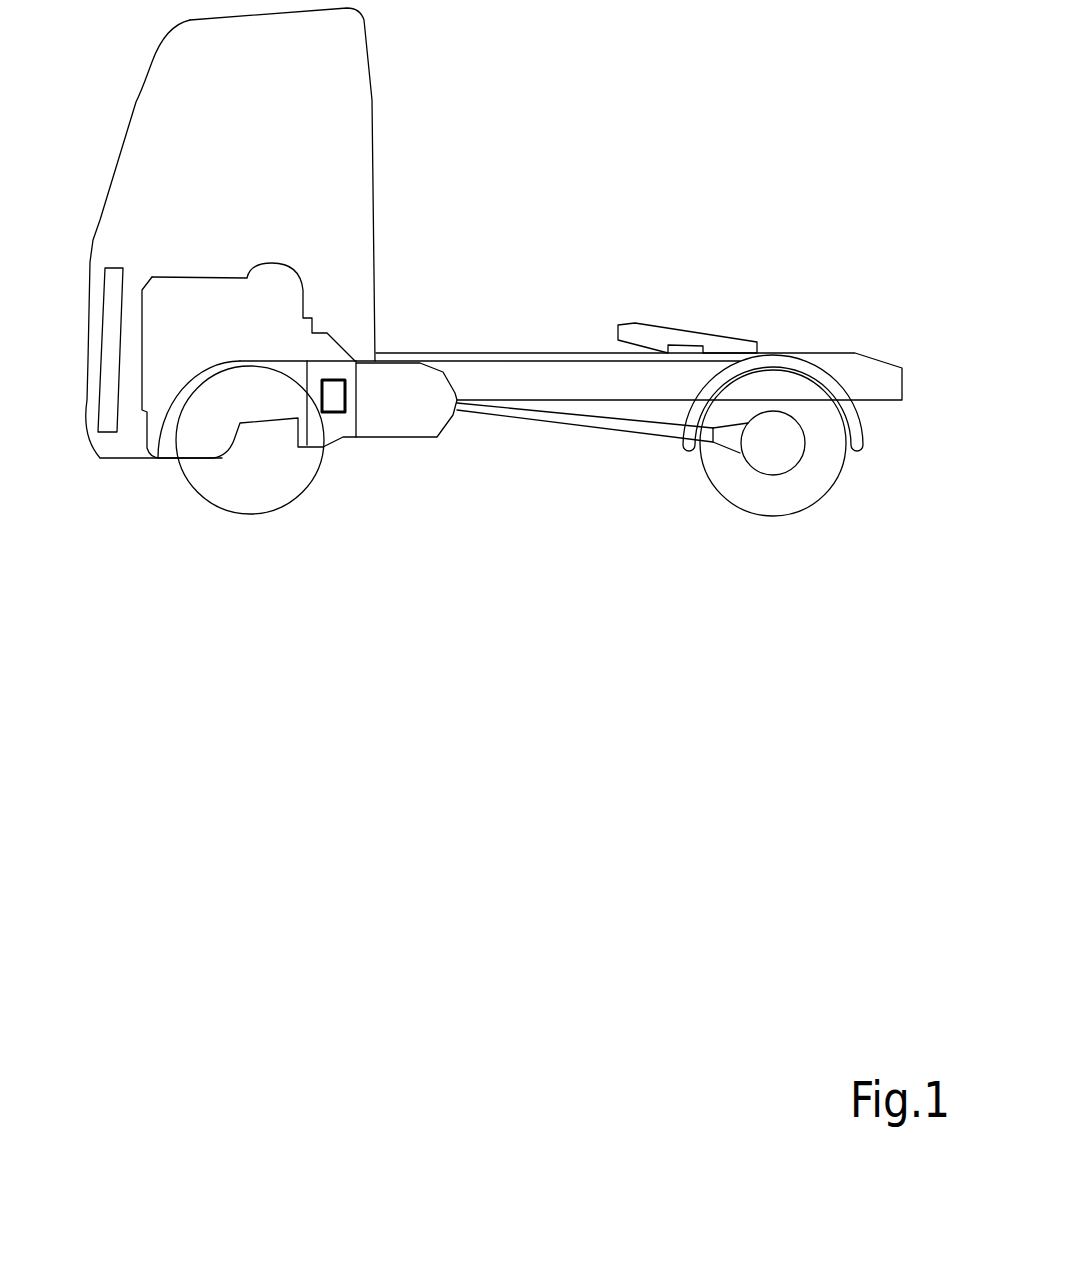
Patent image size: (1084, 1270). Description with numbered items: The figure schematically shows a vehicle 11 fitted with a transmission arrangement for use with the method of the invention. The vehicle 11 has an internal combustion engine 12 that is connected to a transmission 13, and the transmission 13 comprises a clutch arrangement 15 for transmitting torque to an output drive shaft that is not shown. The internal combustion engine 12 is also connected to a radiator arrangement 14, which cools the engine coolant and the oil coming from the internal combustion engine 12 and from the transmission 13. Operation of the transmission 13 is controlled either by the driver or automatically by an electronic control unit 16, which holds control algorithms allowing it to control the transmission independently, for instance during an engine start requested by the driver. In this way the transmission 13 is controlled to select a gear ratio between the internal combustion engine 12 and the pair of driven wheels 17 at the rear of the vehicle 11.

The vehicle 11 is at (360, 110).
The internal combustion engine 12 is at (195, 277).
The transmission 13 is at (447, 403).
The radiator arrangement 14 is at (108, 418).
The clutch arrangement 15 is at (342, 446).
The electronic control unit 16 is at (332, 398).
The driven wheels 17 is at (805, 482).